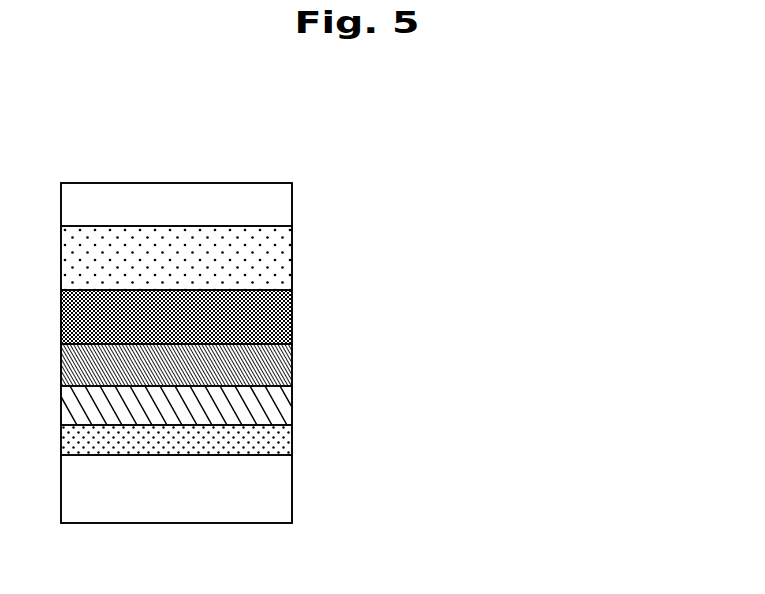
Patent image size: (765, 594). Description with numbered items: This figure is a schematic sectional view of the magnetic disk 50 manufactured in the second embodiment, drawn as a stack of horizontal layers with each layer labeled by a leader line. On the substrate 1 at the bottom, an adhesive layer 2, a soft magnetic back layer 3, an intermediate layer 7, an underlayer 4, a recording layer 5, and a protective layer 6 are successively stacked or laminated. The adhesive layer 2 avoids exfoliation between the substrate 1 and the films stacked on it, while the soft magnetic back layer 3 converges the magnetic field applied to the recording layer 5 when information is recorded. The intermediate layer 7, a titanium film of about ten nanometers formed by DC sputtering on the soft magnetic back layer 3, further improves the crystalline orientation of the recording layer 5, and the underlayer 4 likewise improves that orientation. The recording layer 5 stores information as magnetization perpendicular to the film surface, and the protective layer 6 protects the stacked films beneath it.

The magnetic disk 50 is at (173, 163).
The protective layer 6 is at (282, 202).
The recording layer 5 is at (282, 260).
The underlayer 4 is at (282, 313).
The intermediate layer 7 is at (282, 360).
The soft magnetic back layer 3 is at (282, 405).
The adhesive layer 2 is at (282, 447).
The substrate 1 is at (282, 503).